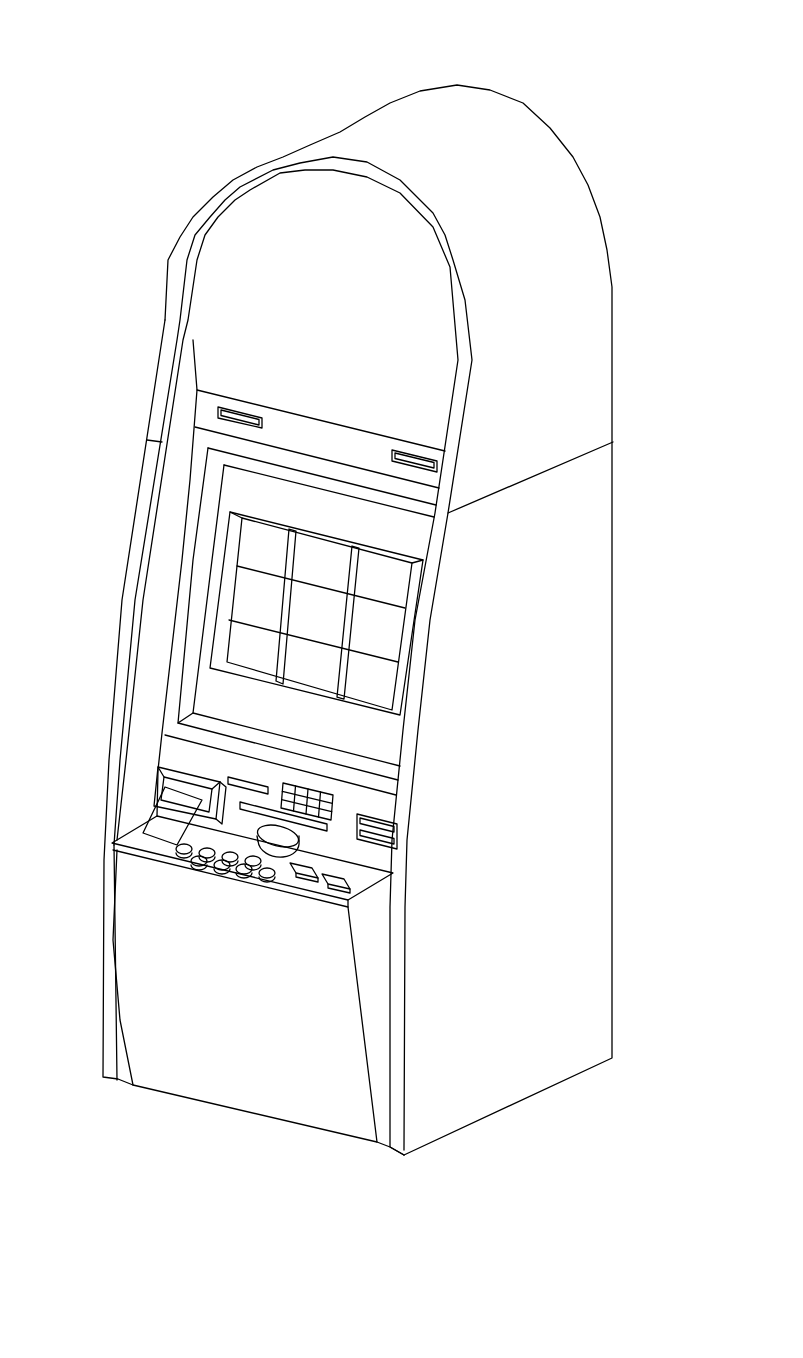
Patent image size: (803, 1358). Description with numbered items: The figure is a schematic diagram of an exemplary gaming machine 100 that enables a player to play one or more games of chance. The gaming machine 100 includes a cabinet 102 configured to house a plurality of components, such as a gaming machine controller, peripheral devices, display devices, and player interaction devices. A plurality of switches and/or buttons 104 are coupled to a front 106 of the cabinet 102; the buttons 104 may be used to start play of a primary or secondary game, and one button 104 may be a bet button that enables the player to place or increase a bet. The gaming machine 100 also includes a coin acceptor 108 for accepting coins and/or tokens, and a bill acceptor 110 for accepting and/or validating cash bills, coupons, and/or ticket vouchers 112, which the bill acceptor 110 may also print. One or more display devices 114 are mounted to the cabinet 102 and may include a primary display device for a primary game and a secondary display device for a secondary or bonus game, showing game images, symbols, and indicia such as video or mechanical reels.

The gaming machine 100 is at (610, 38).
The cabinet 102 is at (554, 172).
The buttons 104 is at (207, 868).
The front 106 is at (203, 406).
The coin acceptor 108 is at (282, 865).
The bill acceptor 110 is at (157, 768).
The ticket vouchers 112 is at (162, 823).
The display devices 114 is at (383, 680).